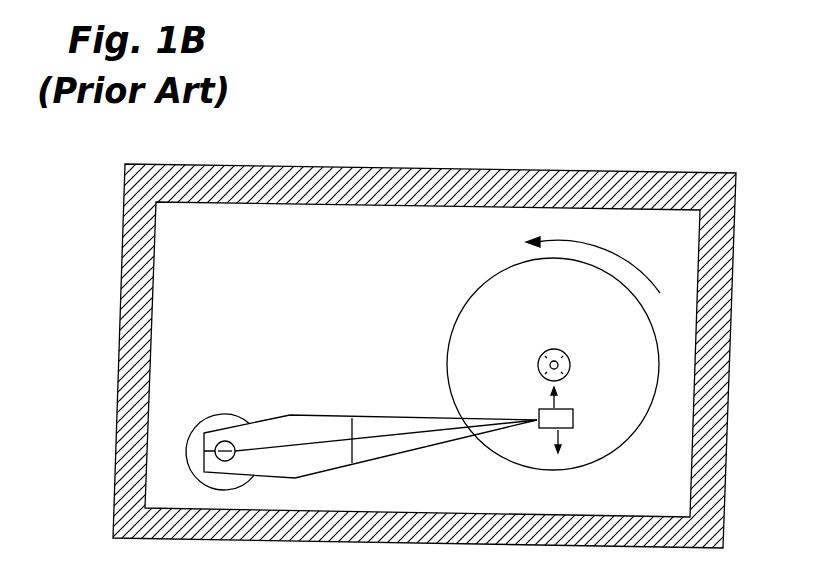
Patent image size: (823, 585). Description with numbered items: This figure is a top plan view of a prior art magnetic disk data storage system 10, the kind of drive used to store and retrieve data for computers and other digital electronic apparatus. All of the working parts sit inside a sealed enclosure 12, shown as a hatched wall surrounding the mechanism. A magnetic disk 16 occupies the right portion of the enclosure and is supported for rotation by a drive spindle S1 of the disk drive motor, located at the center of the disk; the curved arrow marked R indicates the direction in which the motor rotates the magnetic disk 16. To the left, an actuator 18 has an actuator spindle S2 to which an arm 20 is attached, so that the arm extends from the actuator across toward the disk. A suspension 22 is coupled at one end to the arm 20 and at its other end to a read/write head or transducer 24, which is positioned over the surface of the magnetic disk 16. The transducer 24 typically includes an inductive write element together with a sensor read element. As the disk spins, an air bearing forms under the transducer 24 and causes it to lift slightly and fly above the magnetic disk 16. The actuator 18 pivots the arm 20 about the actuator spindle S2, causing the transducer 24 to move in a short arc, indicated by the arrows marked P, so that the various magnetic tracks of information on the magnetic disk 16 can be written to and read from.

The magnetic disk data storage system 10 is at (636, 128).
The sealed enclosure 12 is at (490, 175).
The magnetic disk 16 is at (546, 321).
The actuator 18 is at (214, 420).
The arm 20 is at (307, 428).
The suspension 22 is at (376, 423).
The read/write head or transducer 24 is at (573, 417).
The drive spindle S1 is at (561, 351).
The actuator spindle S2 is at (227, 461).